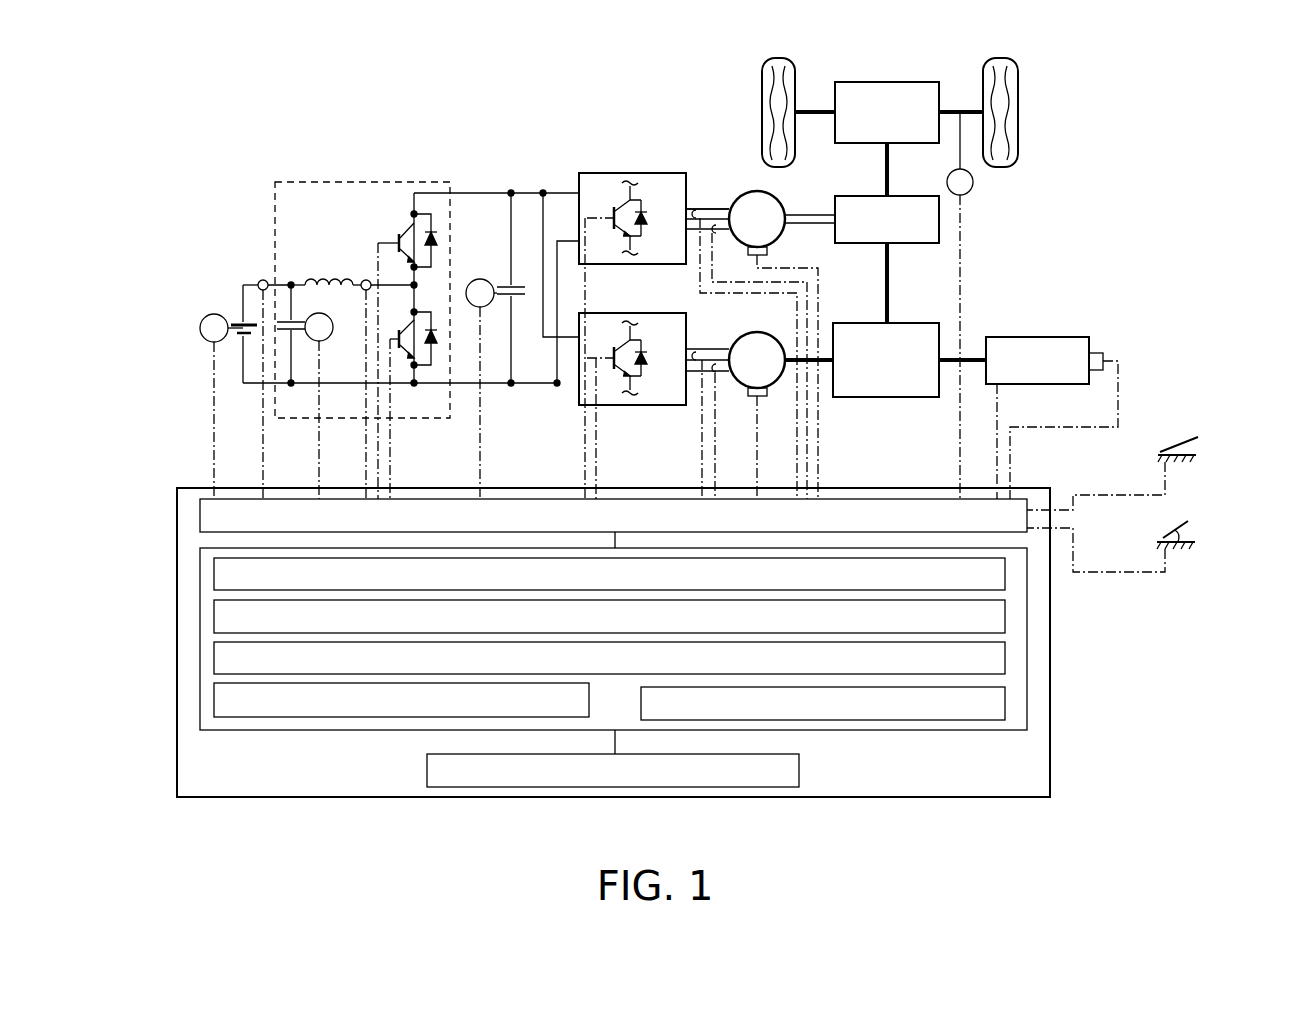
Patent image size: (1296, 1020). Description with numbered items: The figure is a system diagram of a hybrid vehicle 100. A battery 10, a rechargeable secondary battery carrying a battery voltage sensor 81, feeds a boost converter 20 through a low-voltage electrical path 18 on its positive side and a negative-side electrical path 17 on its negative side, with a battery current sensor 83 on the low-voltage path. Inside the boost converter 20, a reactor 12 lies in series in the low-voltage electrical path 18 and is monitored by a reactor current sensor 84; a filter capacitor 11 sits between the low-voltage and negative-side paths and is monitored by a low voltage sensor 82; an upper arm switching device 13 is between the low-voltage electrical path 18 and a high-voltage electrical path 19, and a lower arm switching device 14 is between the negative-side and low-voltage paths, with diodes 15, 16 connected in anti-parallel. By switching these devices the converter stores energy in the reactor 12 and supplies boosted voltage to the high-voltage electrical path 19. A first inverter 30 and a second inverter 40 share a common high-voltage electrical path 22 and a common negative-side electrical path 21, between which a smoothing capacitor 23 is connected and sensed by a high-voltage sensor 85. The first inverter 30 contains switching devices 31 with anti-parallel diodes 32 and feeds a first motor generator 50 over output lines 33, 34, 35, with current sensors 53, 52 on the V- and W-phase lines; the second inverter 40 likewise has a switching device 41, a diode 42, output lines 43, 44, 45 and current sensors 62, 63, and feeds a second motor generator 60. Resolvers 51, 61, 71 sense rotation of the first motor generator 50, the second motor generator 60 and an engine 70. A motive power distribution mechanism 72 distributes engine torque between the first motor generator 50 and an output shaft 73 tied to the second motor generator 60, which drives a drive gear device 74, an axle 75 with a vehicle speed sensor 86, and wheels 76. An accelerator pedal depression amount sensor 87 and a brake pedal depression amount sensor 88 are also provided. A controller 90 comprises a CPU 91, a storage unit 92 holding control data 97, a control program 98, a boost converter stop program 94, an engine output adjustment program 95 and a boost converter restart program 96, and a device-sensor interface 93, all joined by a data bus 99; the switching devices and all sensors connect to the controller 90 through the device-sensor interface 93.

The battery 10 is at (238, 322).
The filter capacitor 11 is at (290, 318).
The reactor 12 is at (330, 282).
The upper arm switching device 13 is at (397, 236).
The lower arm switching device 14 is at (403, 355).
The diode 15 is at (430, 222).
The diode 16 is at (436, 350).
The negative-side electrical path 17 is at (340, 386).
The low-voltage electrical path 18 is at (243, 284).
The high-voltage electrical path 19 is at (438, 200).
The boost converter 20 is at (450, 184).
The negative-side electrical path 21 is at (497, 386).
The high-voltage electrical path 22 is at (505, 191).
The smoothing capacitor 23 is at (520, 298).
The first inverter 30 is at (665, 407).
The switching device 31 is at (616, 362).
The diode 32 is at (645, 366).
The output line 33 is at (697, 348).
The output line 34 is at (704, 356).
The output line 35 is at (714, 364).
The second inverter 40 is at (632, 171).
The switching device 41 is at (614, 214).
The diode 42 is at (643, 226).
The output line 43 is at (698, 207).
The output line 44 is at (704, 212).
The output line 45 is at (714, 224).
The first motor generator 50 is at (748, 388).
The resolver 51 is at (766, 394).
The current sensor 52 is at (716, 377).
The current sensor 53 is at (700, 375).
The second motor generator 60 is at (782, 200).
The resolver 61 is at (768, 252).
The current sensor 62 is at (716, 234).
The current sensor 63 is at (692, 207).
The engine 70 is at (1045, 336).
The resolver 71 is at (1102, 352).
The motive power distribution mechanism 72 is at (945, 330).
The output shaft 73 is at (908, 244).
The drive gear device 74 is at (888, 81).
The axle 75 is at (966, 111).
The wheels 76 is at (1020, 98).
The battery voltage sensor 81 is at (204, 336).
The low voltage sensor 82 is at (329, 338).
The battery current sensor 83 is at (262, 280).
The reactor current sensor 84 is at (364, 280).
The high-voltage sensor 85 is at (480, 279).
The vehicle speed sensor 86 is at (974, 183).
The accelerator pedal depression amount sensor 87 is at (1198, 456).
The brake pedal depression amount sensor 88 is at (1197, 543).
The controller 90 is at (1060, 790).
The CPU 91 is at (799, 770).
The storage unit 92 is at (1027, 720).
The device-sensor interface 93 is at (1020, 500).
The boost converter stop program 94 is at (1005, 574).
The engine output adjustment program 95 is at (1005, 616).
The boost converter restart program 96 is at (1005, 658).
The control data 97 is at (214, 700).
The control program 98 is at (1005, 700).
The data bus 99 is at (615, 742).
The hybrid vehicle 100 is at (1120, 116).